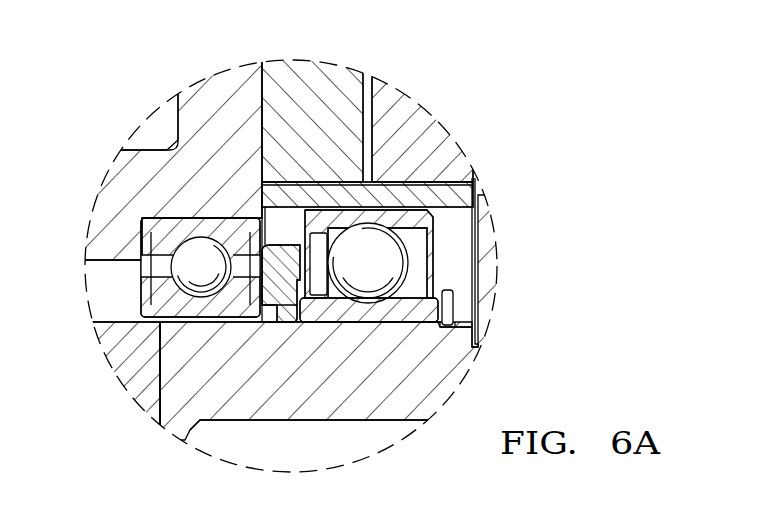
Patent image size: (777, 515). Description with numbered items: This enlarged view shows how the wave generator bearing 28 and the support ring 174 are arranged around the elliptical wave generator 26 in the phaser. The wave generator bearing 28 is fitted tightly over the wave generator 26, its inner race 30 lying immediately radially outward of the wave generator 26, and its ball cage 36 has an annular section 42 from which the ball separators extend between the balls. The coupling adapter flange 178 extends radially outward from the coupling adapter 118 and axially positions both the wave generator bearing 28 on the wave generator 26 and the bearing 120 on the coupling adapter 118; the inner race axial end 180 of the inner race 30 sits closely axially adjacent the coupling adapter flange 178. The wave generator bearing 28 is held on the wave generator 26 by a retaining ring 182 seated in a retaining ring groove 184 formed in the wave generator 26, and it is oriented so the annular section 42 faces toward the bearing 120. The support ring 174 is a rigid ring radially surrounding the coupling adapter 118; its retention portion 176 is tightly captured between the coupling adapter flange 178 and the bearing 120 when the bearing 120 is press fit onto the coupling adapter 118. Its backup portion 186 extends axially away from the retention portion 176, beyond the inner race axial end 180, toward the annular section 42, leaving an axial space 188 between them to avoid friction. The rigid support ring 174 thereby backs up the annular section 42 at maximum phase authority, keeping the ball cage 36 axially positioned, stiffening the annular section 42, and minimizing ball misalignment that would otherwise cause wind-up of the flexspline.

The wave generator 26 is at (405, 385).
The wave generator bearing 28 is at (440, 239).
The inner race 30 is at (351, 310).
The ball cage 36 is at (345, 243).
The annular section 42 is at (318, 232).
The coupling adapter 118 is at (190, 370).
The bearing 120 is at (169, 302).
The support ring 174 is at (253, 243).
The retention portion 176 is at (264, 312).
The coupling adapter flange 178 is at (260, 246).
The inner race axial end 180 is at (282, 316).
The retaining ring 182 is at (452, 295).
The retaining ring groove 184 is at (442, 328).
The backup portion 186 is at (306, 290).
The axial space 188 is at (298, 282).